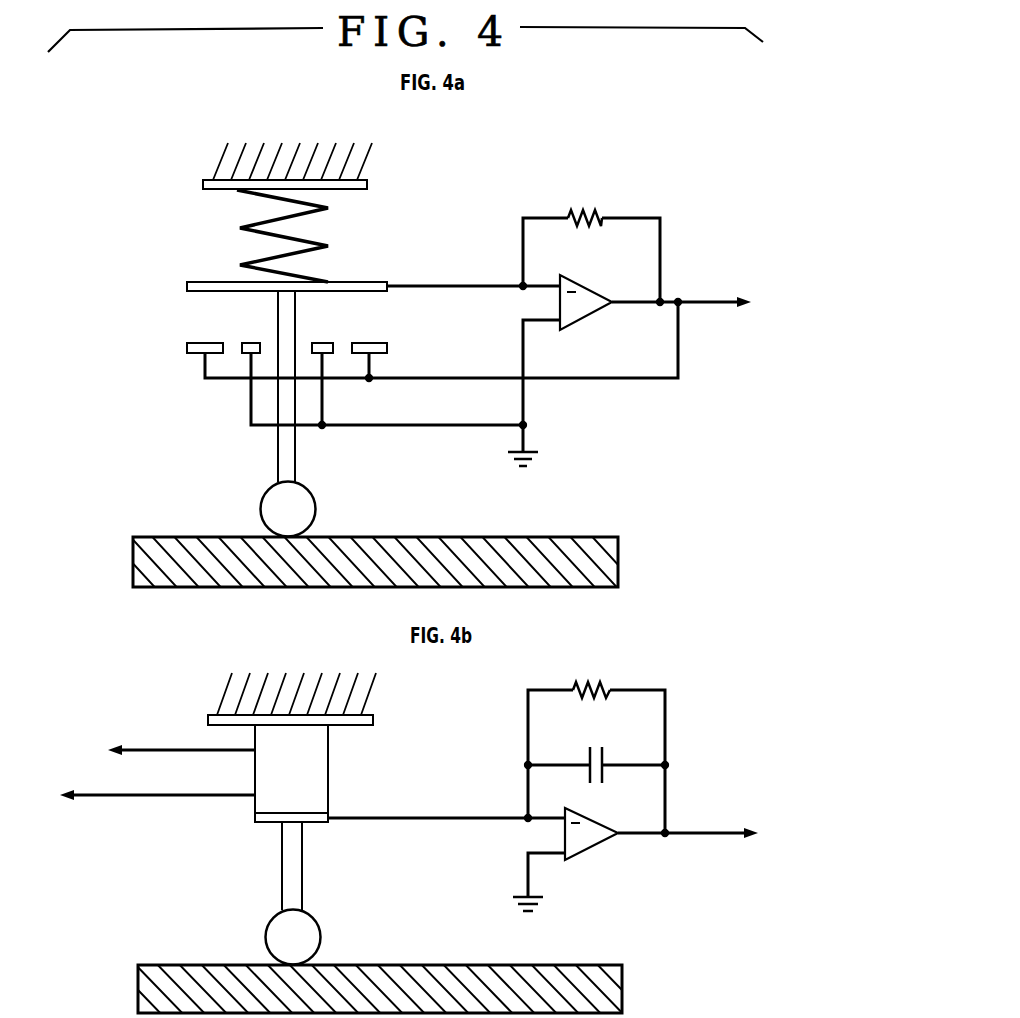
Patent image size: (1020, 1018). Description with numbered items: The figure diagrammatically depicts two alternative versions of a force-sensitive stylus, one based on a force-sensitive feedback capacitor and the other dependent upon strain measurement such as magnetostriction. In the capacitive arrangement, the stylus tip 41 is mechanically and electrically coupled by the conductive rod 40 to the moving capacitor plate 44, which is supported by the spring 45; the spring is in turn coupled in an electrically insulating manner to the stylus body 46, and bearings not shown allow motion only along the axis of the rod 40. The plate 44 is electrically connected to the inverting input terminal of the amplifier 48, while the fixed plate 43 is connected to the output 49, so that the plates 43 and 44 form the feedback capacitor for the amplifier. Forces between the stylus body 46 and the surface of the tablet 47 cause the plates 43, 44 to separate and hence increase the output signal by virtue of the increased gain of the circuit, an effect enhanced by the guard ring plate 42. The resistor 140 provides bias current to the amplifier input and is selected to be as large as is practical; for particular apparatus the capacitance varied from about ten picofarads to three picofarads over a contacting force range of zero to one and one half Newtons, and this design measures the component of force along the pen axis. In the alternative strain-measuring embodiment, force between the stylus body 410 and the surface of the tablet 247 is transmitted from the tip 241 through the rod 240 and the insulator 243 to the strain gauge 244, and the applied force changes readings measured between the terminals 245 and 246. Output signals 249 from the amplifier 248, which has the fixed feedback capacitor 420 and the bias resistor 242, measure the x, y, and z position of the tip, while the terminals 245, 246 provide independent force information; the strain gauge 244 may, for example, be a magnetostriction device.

In FIG. 4A, the rod 40 is at (280, 453).
In FIG. 4A, the stylus tip 41 is at (300, 504).
In FIG. 4A, the guard ring plate 42 is at (243, 338).
In FIG. 4A, the fixed plate 43 is at (187, 350).
In FIG. 4A, the moving capacitor plate 44 is at (187, 287).
In FIG. 4A, the spring 45 is at (330, 245).
In FIG. 4A, the stylus body 46 is at (205, 188).
In FIG. 4A, the tablet 47 is at (615, 546).
In FIG. 4A, the amplifier 48 is at (586, 291).
In FIG. 4A, the output 49 is at (699, 303).
In FIG. 4A, the resistor 140 is at (584, 201).
In FIG. 4B, the rod 240 is at (284, 876).
In FIG. 4B, the tip 241 is at (305, 929).
In FIG. 4B, the bias resistor 242 is at (591, 677).
In FIG. 4B, the insulator 243 is at (255, 818).
In FIG. 4B, the strain gauge 244 is at (318, 773).
In FIG. 4B, the terminal 245 is at (110, 799).
In FIG. 4B, the terminal 246 is at (143, 746).
In FIG. 4B, the tablet 247 is at (619, 969).
In FIG. 4B, the amplifier 248 is at (591, 849).
In FIG. 4B, the output signals 249 is at (709, 835).
In FIG. 4B, the stylus body 410 is at (373, 722).
In FIG. 4B, the fixed feedback capacitor 420 is at (595, 753).